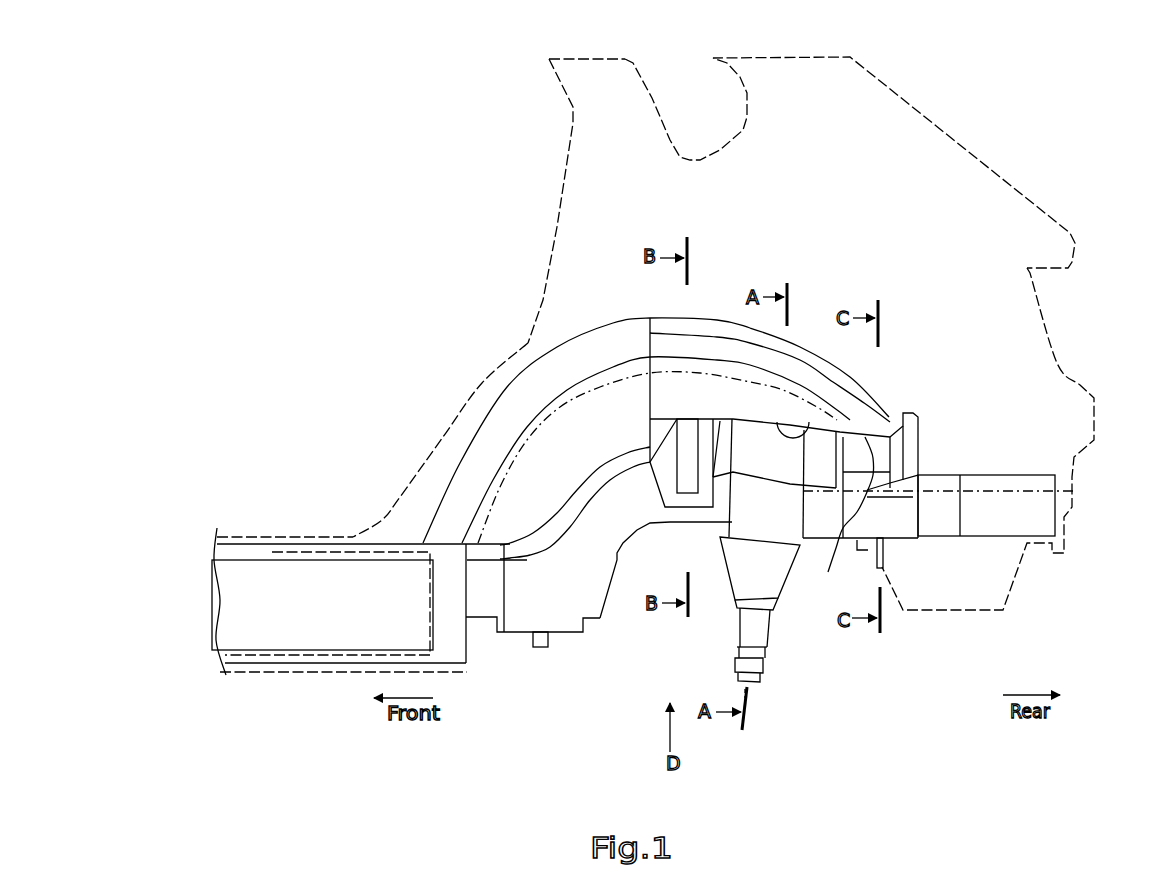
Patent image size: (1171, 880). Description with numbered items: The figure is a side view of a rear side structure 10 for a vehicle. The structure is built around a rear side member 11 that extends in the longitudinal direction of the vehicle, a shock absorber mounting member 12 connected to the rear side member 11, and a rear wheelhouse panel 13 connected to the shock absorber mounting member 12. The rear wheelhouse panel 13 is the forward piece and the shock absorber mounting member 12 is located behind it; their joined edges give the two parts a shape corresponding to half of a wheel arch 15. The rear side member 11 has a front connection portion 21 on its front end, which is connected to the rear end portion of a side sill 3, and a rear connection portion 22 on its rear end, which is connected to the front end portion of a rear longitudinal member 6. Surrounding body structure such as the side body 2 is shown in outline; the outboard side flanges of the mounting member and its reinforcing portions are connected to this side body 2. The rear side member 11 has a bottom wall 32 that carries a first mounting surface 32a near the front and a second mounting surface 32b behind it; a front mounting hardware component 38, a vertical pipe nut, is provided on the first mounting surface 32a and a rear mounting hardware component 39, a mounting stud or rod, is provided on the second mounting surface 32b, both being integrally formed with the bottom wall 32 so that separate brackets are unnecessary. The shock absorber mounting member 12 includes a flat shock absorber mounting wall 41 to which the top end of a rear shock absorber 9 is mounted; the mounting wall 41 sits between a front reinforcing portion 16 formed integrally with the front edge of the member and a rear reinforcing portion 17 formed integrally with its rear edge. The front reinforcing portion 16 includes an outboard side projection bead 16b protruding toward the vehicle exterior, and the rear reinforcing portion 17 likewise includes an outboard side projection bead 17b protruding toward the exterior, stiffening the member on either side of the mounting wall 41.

The side body 2 is at (560, 217).
The side sill 3 is at (278, 552).
The rear longitudinal member 6 is at (1029, 474).
The rear shock absorber 9 is at (722, 588).
The rear side structure 10 is at (1030, 108).
The rear side member 11 is at (598, 635).
The shock absorber mounting member 12 is at (720, 330).
The rear wheelhouse panel 13 is at (525, 403).
The wheel arch 15 is at (658, 310).
The front reinforcing portion 16 is at (646, 446).
The outboard side projection bead 16b is at (688, 470).
The rear reinforcing portion 17 is at (892, 421).
The outboard side projection bead 17b is at (828, 572).
The front connection portion 21 is at (367, 538).
The rear connection portion 22 is at (941, 468).
The bottom wall 32 is at (663, 527).
The first mounting surface 32a is at (517, 633).
The second mounting surface 32b is at (908, 539).
The front mounting hardware component 38 is at (538, 648).
The rear mounting hardware component 39 is at (885, 550).
The shock absorber mounting wall 41 is at (809, 422).